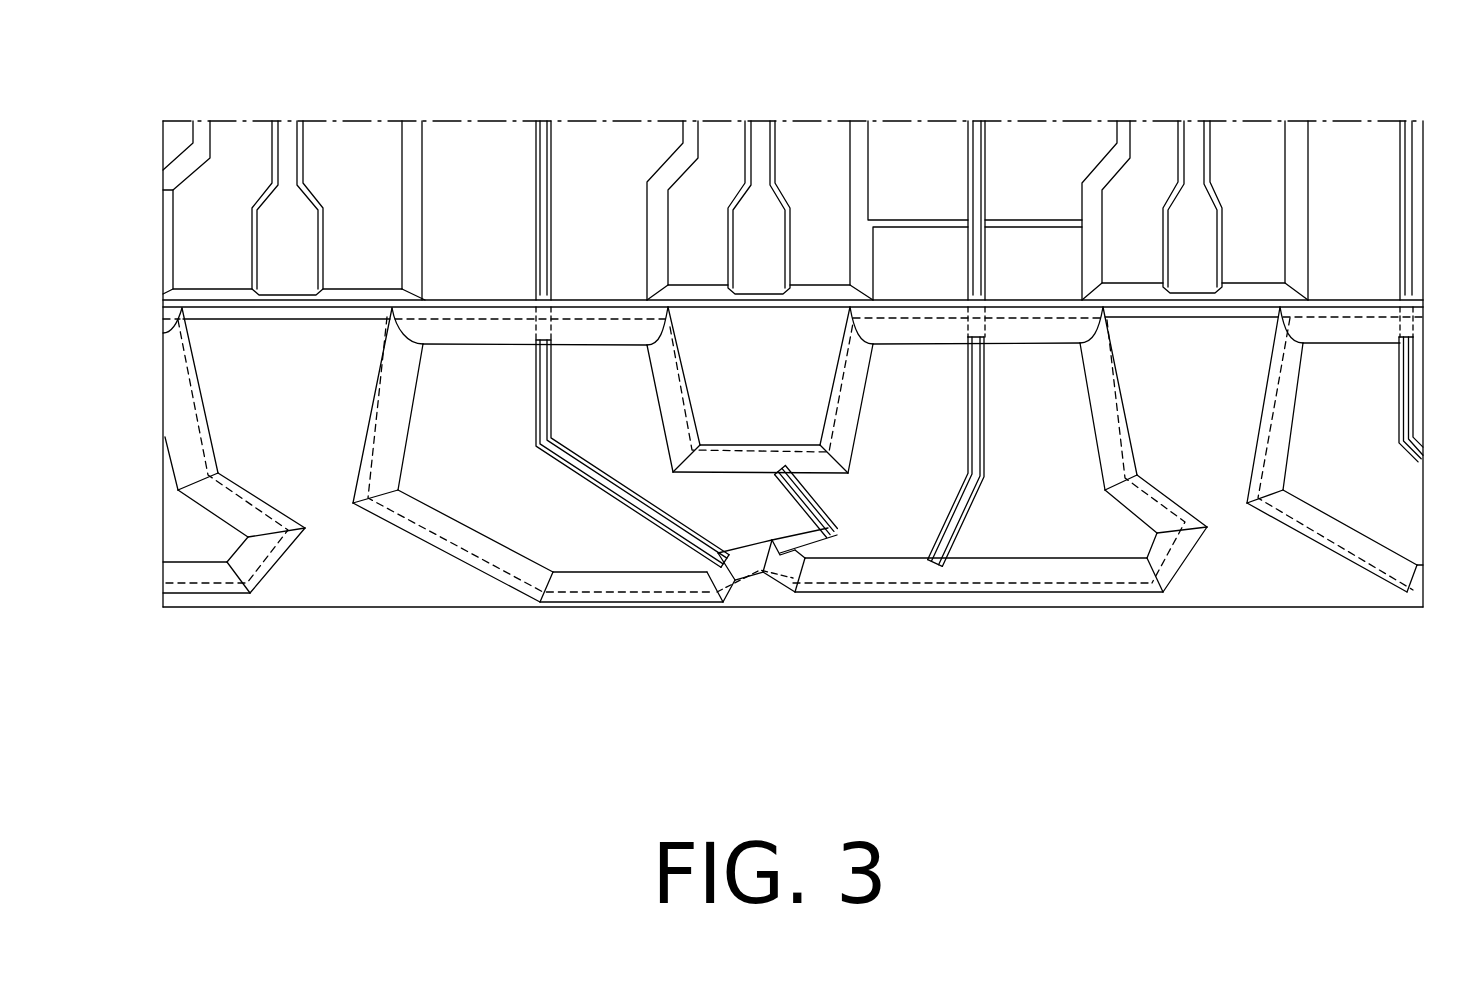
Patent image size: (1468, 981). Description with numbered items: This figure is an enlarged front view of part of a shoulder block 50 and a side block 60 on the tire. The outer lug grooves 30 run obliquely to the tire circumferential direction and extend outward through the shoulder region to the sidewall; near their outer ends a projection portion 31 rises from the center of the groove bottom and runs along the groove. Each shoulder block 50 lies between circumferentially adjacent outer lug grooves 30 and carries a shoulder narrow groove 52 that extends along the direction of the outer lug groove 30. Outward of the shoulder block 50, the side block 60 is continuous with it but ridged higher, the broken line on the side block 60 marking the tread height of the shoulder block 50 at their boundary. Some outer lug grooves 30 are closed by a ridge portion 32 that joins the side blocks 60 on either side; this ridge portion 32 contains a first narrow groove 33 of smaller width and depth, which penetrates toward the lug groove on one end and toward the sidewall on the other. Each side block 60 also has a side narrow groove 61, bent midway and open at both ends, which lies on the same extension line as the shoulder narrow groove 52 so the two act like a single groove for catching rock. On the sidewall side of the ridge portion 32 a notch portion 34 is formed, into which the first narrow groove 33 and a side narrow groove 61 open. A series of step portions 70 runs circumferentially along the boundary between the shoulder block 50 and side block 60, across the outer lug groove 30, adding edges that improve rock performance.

The outer lug groove 30 is at (775, 395).
The projection portion 31 is at (758, 143).
The ridge portion 32 is at (762, 505).
The first narrow groove 33 is at (840, 528).
The notch portion 34 is at (755, 583).
The shoulder block 50 is at (483, 138).
The shoulder narrow groove 52 is at (545, 148).
The side block 60 is at (578, 555).
The side narrow groove 61 is at (648, 520).
The step portion 70 is at (215, 303).